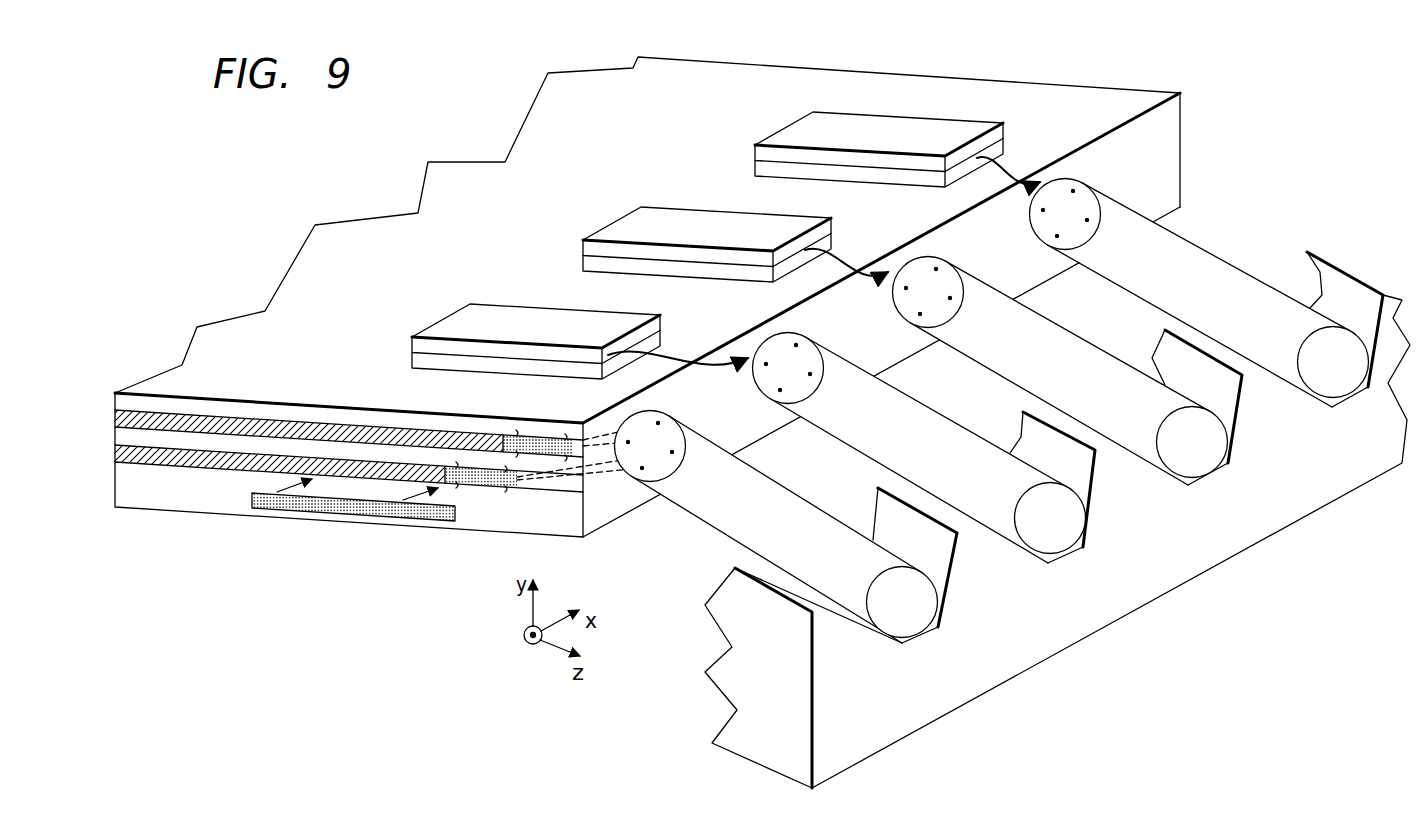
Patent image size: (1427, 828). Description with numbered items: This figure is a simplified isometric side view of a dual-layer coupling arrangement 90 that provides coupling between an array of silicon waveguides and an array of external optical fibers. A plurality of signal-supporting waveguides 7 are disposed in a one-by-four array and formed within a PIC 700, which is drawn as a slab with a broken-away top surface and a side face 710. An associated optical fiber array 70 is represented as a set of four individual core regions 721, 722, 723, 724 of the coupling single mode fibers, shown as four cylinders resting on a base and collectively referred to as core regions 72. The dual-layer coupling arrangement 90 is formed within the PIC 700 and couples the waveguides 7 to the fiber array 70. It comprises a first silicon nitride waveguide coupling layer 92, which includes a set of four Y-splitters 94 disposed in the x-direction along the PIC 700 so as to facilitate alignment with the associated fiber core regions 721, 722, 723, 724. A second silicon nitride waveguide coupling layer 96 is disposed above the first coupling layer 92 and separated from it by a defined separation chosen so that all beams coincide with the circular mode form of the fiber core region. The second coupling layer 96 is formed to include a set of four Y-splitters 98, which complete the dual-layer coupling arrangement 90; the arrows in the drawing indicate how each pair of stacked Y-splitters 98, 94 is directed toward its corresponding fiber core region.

The PIC 700 is at (525, 122).
The side surface of substrate 710 is at (1155, 148).
The second silicon nitride waveguide coupling layer 96 is at (115, 418).
The first silicon nitride waveguide coupling layer 92 is at (115, 452).
The Y-splitters 98 is at (537, 442).
The Y-splitters 94 is at (470, 477).
The dual-layer coupling arrangement 90 is at (636, 171).
The signal-supporting waveguides 7 is at (283, 510).
The optical fiber array 70 is at (1022, 640).
The core regions 72 is at (693, 549).
The core region 721 is at (778, 490).
The core region 722 is at (908, 410).
The core region 723 is at (1050, 336).
The core region 724 is at (1178, 247).